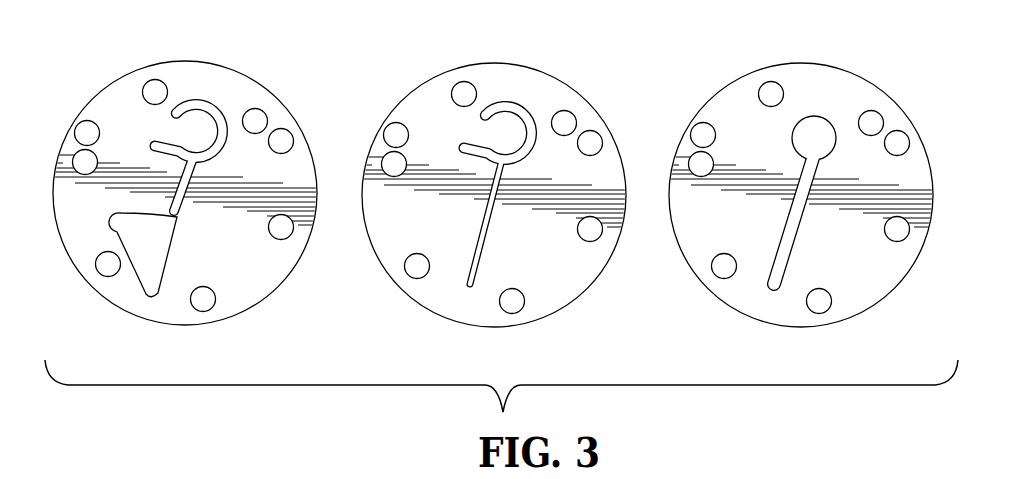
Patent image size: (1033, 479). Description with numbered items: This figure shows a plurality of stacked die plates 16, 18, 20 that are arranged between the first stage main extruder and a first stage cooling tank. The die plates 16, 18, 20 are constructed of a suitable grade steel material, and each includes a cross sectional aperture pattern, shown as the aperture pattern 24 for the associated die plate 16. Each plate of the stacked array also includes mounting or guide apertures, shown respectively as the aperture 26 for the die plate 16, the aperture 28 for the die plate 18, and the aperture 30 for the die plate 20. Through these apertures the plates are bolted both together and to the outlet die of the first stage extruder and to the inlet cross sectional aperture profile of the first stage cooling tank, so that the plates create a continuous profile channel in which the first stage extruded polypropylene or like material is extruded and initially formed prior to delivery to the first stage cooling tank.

The die plate 16 is at (185, 180).
The die plate 18 is at (494, 197).
The die plate 20 is at (807, 196).
The cross sectional aperture pattern 24 is at (203, 106).
The mounting or guide aperture 26 is at (278, 238).
The mounting or guide aperture 28 is at (592, 240).
The mounting or guide aperture 30 is at (899, 241).